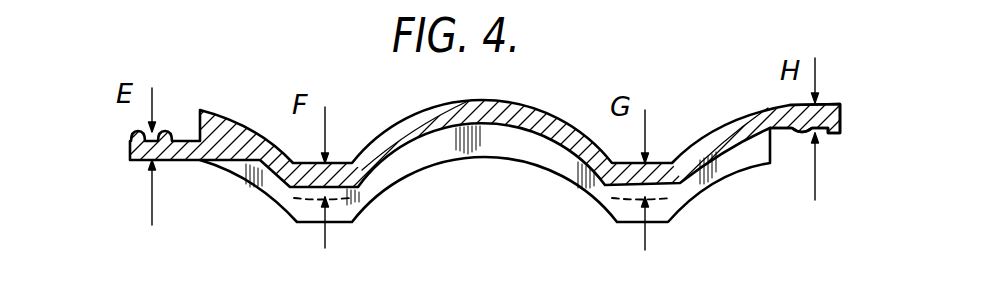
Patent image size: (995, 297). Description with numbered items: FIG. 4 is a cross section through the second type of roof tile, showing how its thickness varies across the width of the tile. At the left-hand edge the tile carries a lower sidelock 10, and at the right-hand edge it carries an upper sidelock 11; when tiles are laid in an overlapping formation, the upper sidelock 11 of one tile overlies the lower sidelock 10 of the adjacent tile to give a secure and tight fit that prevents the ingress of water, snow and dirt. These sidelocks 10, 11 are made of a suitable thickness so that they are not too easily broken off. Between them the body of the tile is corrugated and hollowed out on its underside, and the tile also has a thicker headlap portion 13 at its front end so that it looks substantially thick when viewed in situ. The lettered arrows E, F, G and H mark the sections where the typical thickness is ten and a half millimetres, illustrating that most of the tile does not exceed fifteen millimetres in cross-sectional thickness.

The lower sidelock 10 is at (130, 149).
The upper sidelock 11 is at (841, 118).
The headlap portion 13 is at (494, 145).